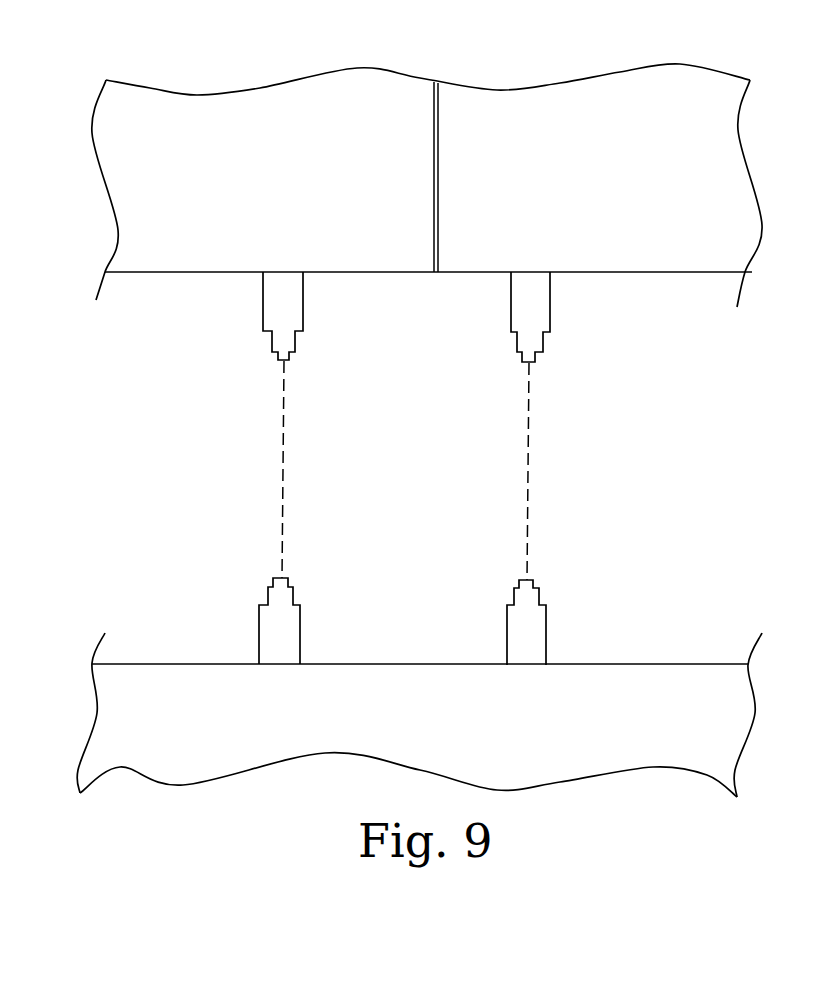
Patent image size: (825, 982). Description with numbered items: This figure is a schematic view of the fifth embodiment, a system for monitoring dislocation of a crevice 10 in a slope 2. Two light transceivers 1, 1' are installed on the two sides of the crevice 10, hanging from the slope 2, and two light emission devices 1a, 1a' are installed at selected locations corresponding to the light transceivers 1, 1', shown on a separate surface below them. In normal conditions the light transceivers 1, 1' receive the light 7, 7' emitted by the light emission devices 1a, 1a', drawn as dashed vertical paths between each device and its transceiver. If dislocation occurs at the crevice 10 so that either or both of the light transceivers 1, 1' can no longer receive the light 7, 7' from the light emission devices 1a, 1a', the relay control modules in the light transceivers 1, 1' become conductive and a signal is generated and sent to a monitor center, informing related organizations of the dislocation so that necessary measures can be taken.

The light transceiver 1 is at (324, 316).
The light transceiver 1' is at (572, 317).
The light emission device 1a is at (329, 621).
The light emission device 1a' is at (576, 622).
The slope 2 is at (669, 261).
The light 7 is at (330, 469).
The light 7' is at (578, 471).
The crevice 10 is at (438, 183).